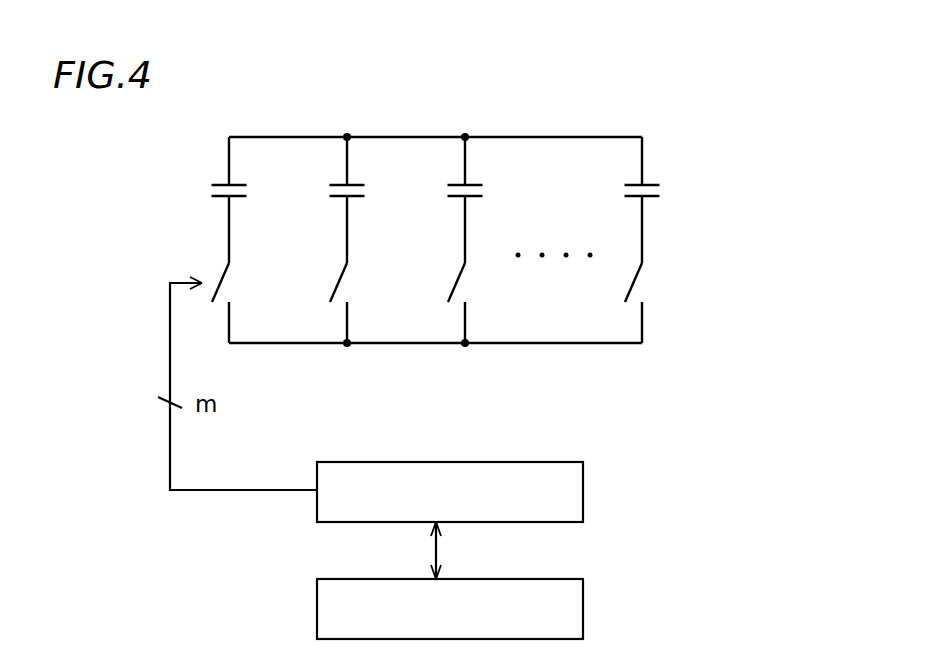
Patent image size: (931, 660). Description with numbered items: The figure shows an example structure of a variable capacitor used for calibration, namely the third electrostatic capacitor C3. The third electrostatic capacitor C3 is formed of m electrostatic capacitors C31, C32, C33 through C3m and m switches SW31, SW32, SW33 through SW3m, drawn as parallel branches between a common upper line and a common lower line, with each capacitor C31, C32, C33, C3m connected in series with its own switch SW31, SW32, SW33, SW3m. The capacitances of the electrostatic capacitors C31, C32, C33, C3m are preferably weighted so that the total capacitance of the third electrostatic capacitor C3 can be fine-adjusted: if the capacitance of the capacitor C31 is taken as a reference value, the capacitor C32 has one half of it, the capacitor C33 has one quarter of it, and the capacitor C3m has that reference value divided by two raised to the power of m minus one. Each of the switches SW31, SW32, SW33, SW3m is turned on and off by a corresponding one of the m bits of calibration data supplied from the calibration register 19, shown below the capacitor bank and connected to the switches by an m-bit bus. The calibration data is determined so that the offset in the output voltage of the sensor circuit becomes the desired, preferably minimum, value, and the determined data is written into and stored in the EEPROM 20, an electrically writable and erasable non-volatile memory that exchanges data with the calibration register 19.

The calibration register 19 is at (583, 490).
The EEPROM 20 is at (583, 611).
The third electrostatic capacitor C3 is at (446, 118).
The electrostatic capacitor C31 is at (258, 200).
The electrostatic capacitor C32 is at (376, 200).
The electrostatic capacitor C33 is at (494, 200).
The electrostatic capacitor C3m is at (674, 200).
The switch SW31 is at (259, 303).
The switch SW32 is at (377, 303).
The switch SW33 is at (496, 303).
The switch SW3m is at (675, 303).